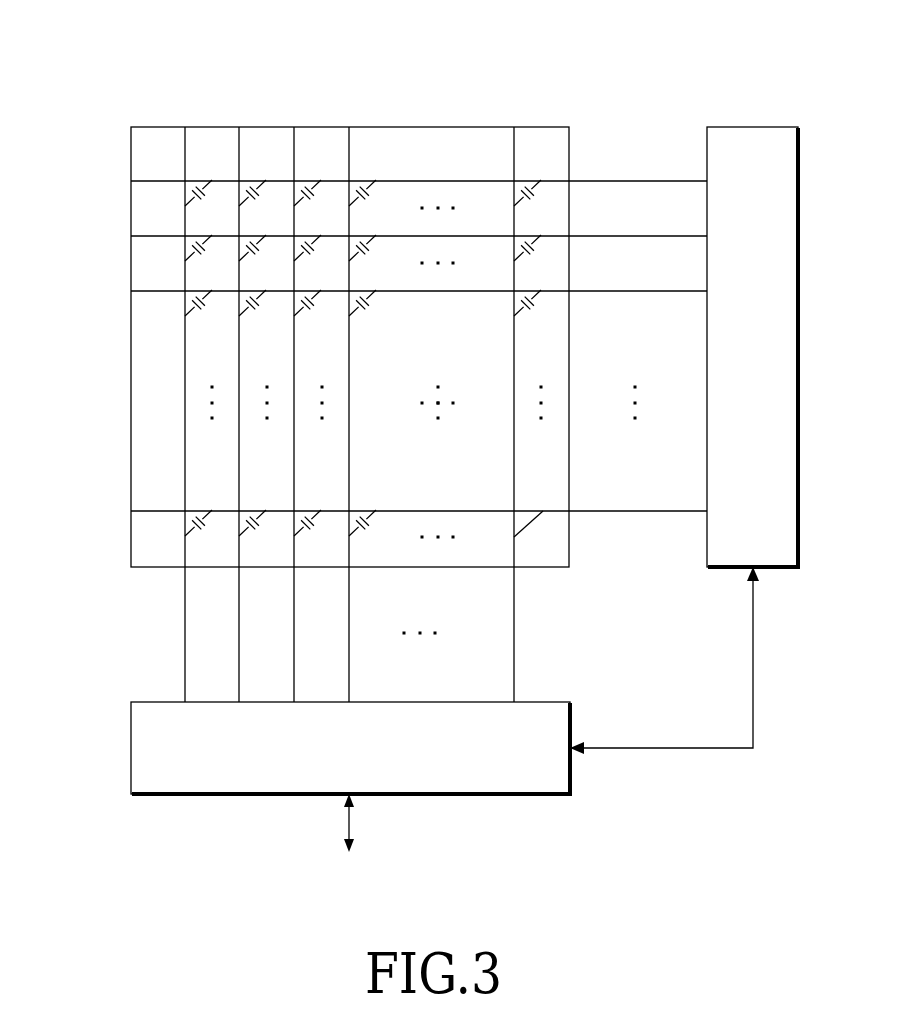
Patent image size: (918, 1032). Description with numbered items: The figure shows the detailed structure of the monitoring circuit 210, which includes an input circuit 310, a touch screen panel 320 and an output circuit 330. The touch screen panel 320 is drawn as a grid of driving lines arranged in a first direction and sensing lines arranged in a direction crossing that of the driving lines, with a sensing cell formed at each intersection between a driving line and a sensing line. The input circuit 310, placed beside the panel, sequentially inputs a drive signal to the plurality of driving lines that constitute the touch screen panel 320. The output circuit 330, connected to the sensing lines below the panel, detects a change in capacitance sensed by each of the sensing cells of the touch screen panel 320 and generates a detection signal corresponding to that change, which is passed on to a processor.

The monitoring circuit 210 is at (726, 77).
The input circuit 310 is at (752, 127).
The touch screen panel 320 is at (101, 172).
The output circuit 330 is at (548, 702).